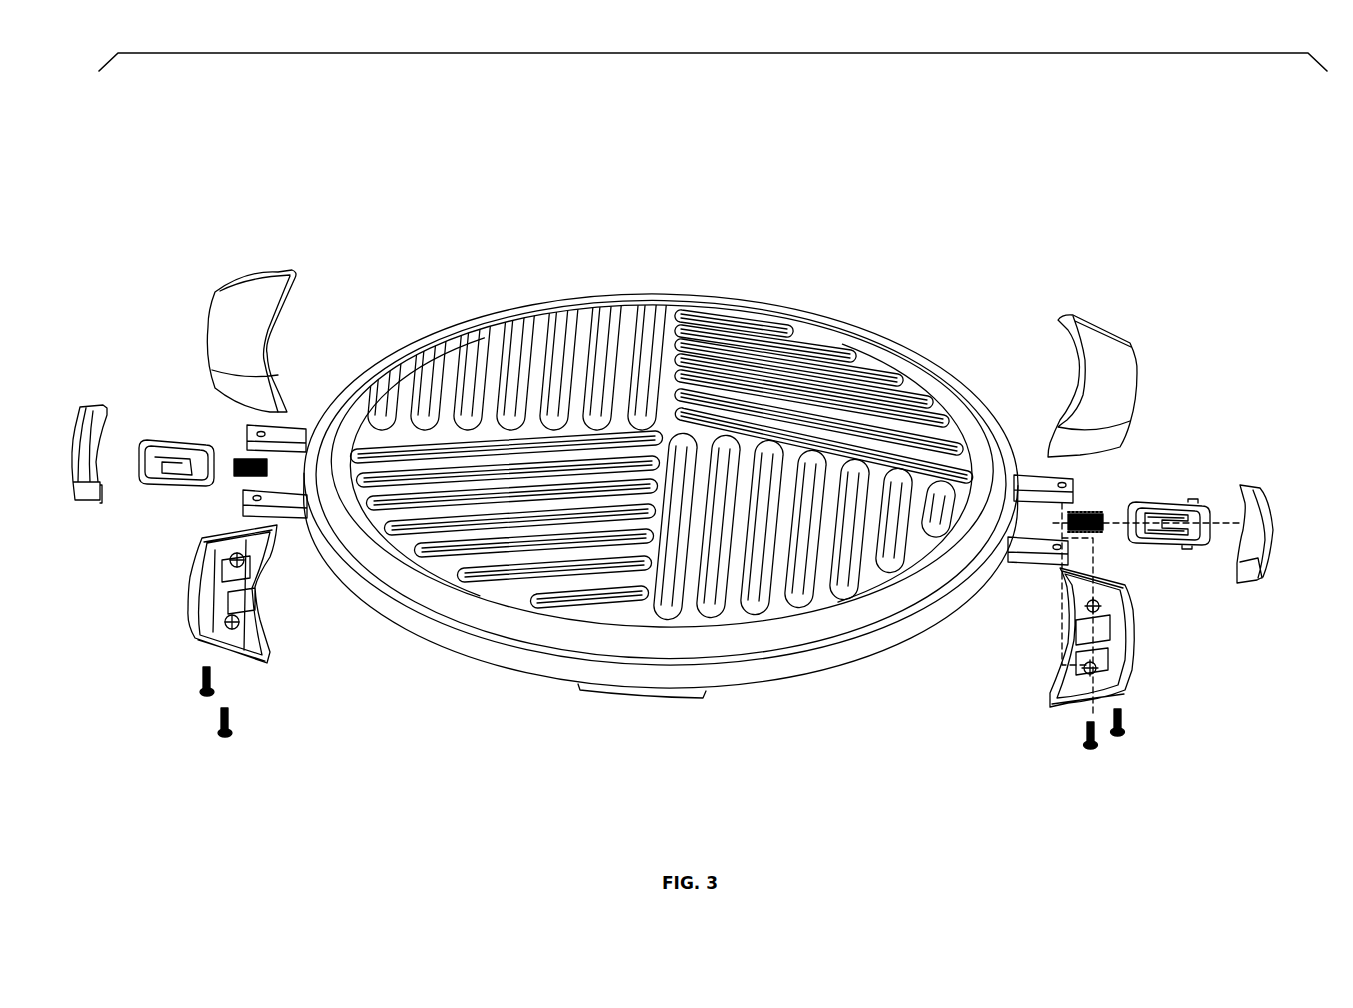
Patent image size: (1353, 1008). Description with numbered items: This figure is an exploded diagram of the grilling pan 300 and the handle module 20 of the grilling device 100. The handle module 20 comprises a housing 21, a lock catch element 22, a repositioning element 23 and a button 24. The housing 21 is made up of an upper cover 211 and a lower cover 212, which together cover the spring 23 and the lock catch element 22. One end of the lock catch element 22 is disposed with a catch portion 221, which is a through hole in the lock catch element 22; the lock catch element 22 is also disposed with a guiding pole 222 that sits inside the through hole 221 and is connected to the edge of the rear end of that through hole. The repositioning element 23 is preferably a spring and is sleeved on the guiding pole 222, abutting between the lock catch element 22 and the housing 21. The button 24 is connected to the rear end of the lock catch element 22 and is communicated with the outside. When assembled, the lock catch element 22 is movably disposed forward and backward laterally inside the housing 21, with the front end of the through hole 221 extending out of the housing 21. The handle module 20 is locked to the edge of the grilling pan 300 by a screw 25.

The grill pan 100 is at (1130, 344).
The grilling pan 300 is at (694, 300).
The handle module 20 is at (1098, 333).
The housing 21 is at (1090, 353).
The upper cover 211 is at (1120, 390).
The lower cover 212 is at (1132, 672).
The lock catch element 22 is at (1153, 507).
The catch portion 221 is at (1150, 520).
The guiding pole 222 is at (1177, 520).
The repositioning element 23 is at (1087, 516).
The button 24 is at (1255, 495).
The screw 25 is at (1089, 750).